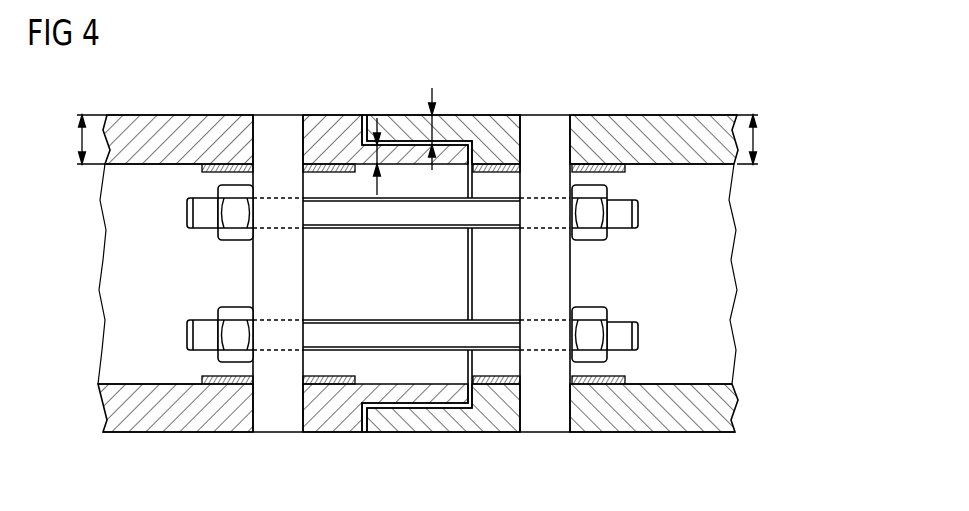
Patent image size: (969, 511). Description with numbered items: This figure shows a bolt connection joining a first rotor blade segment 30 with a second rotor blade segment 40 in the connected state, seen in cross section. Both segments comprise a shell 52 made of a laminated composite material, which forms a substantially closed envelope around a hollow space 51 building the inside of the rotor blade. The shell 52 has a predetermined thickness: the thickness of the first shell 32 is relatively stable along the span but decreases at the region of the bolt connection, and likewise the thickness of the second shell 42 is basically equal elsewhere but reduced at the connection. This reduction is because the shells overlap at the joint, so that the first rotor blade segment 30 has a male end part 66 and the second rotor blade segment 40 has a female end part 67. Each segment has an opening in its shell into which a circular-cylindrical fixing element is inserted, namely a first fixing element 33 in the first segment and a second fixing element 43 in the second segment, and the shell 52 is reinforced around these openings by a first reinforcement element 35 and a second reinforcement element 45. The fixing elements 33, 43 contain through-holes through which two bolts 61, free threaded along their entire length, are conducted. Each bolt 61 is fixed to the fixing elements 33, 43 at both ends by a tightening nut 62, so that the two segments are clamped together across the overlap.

The first rotor blade segment 30 is at (190, 125).
The thickness of the first shell 32 is at (80, 140).
The first fixing element 33 is at (280, 125).
The first reinforcement element 35 is at (229, 162).
The second rotor blade segment 40 is at (655, 125).
The thickness of the second shell 42 is at (758, 141).
The second fixing element 43 is at (545, 125).
The second reinforcement element 45 is at (590, 160).
The hollow space 51 is at (730, 293).
The shell 52 is at (113, 158).
The bolt 61 is at (376, 330).
The tightening nut 62 is at (237, 312).
The male end part 66 is at (400, 150).
The female end part 67 is at (387, 124).